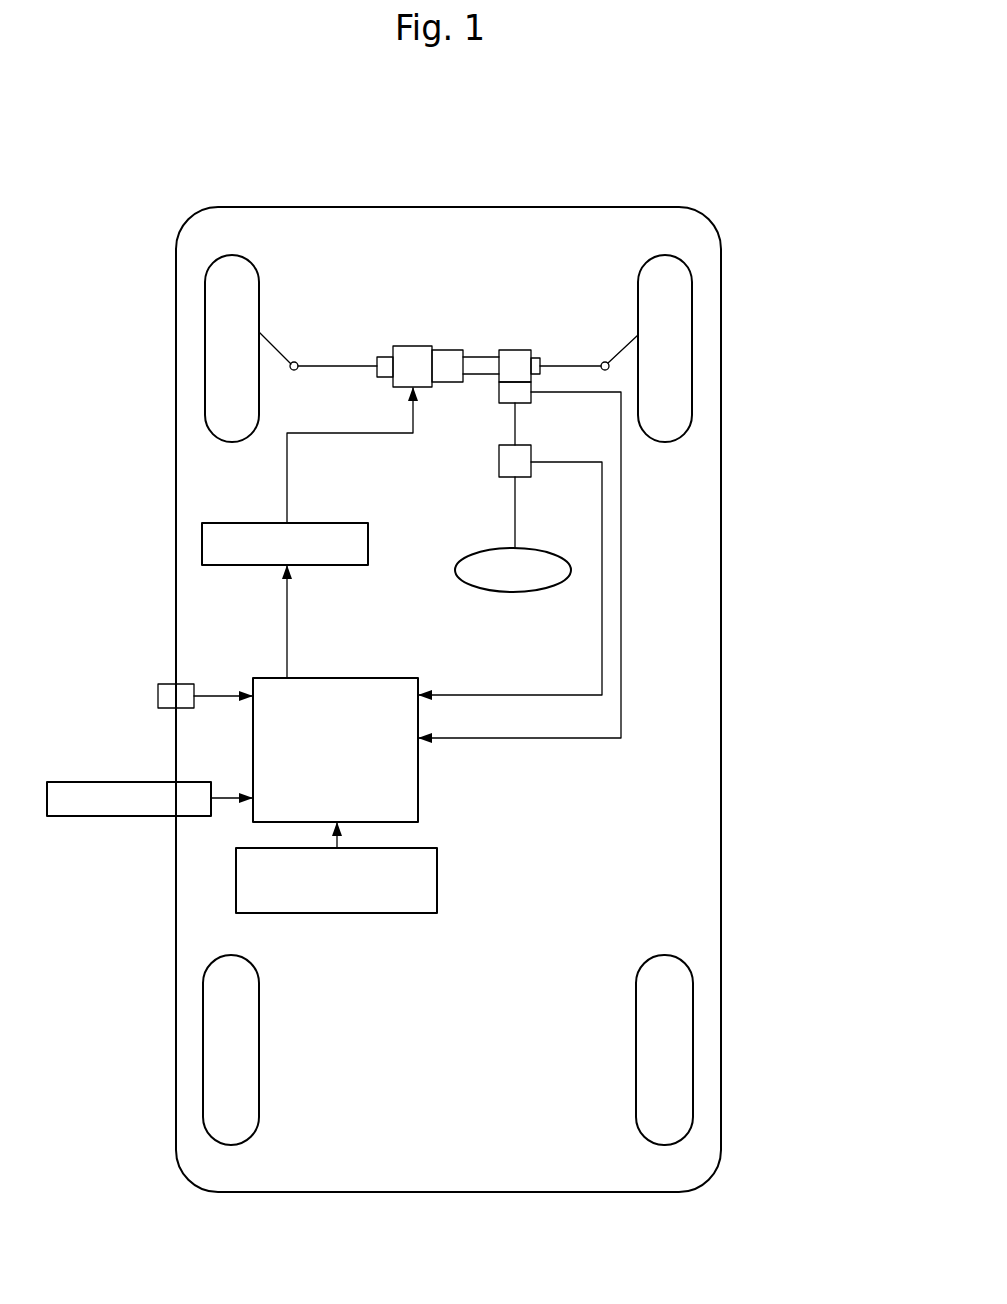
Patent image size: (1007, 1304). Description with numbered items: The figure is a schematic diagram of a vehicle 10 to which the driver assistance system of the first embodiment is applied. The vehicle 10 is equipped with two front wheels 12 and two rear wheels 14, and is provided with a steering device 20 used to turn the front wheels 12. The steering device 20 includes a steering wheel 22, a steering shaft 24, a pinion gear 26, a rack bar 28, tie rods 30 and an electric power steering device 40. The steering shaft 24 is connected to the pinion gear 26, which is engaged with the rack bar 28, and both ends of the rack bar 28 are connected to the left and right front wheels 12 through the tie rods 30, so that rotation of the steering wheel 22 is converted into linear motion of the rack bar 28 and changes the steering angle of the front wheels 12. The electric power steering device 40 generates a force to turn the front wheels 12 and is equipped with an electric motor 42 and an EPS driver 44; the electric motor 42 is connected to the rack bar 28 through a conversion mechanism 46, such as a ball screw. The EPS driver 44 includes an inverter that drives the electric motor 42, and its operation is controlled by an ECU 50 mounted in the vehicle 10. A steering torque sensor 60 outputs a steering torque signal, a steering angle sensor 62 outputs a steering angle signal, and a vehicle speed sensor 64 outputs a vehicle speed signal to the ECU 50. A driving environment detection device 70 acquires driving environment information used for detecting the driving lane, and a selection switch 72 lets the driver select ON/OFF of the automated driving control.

The vehicle 10 is at (722, 192).
The front wheels 12 is at (205, 346).
The rear wheels 14 is at (203, 1045).
The steering device 20 is at (508, 273).
The steering wheel 22 is at (456, 571).
The steering shaft 24 is at (515, 522).
The pinion gear 26 is at (513, 350).
The rack bar 28 is at (565, 363).
The tie rods 30 is at (273, 344).
The electric power steering device 40 is at (398, 275).
The electric motor 42 is at (413, 346).
The EPS driver 44 is at (325, 523).
The conversion mechanism 46 is at (449, 350).
The ECU 50 is at (265, 678).
The steering torque sensor 60 is at (499, 392).
The steering angle sensor 62 is at (499, 462).
The vehicle speed sensor 64 is at (158, 696).
The driving environment detection device 70 is at (437, 878).
The selection switch 72 is at (135, 816).